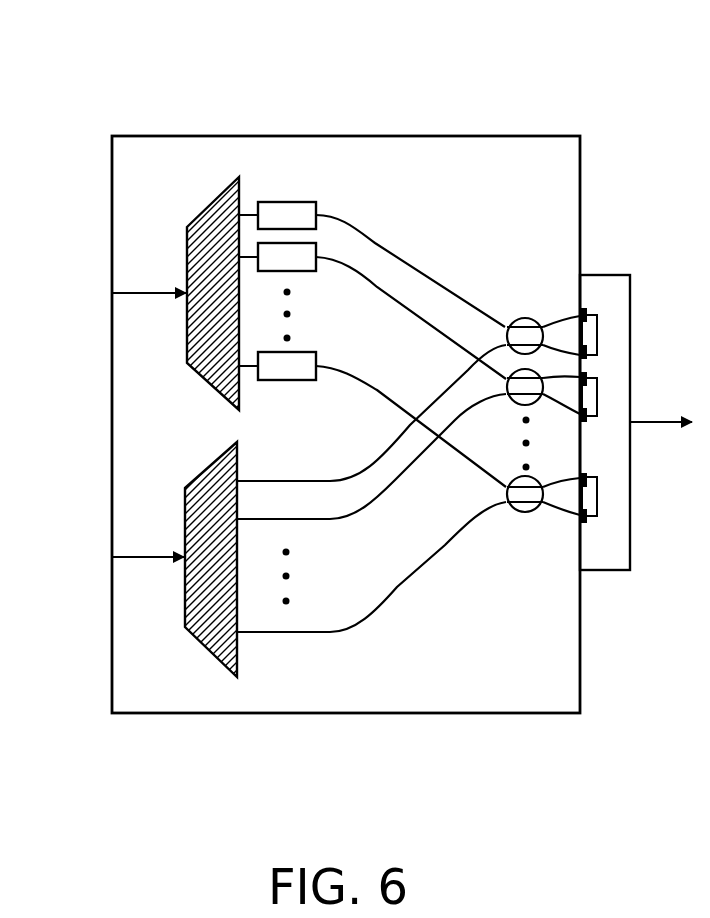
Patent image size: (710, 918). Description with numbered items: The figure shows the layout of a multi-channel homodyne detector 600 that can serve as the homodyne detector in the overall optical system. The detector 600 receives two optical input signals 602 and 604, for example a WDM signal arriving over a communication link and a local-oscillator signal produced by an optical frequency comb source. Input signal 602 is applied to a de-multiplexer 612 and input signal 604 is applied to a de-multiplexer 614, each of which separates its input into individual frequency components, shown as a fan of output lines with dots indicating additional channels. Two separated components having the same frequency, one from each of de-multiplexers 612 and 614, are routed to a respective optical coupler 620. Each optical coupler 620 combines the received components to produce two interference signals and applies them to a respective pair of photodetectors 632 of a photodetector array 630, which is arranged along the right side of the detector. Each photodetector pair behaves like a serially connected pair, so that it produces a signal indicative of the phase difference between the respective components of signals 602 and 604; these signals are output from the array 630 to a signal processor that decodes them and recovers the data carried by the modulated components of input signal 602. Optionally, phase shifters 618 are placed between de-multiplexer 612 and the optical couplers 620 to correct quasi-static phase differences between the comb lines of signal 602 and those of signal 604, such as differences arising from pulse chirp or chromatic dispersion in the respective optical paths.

The multi-channel homodyne detector 600 is at (494, 66).
The optical input signal 602 is at (150, 295).
The optical input signal 604 is at (145, 559).
The de-multiplexer 612 is at (208, 205).
The de-multiplexer 614 is at (212, 470).
The phase shifters 618 is at (300, 202).
The optical coupler 620 is at (521, 318).
The photodetector array 630 is at (607, 275).
The photodetectors 632 is at (588, 310).